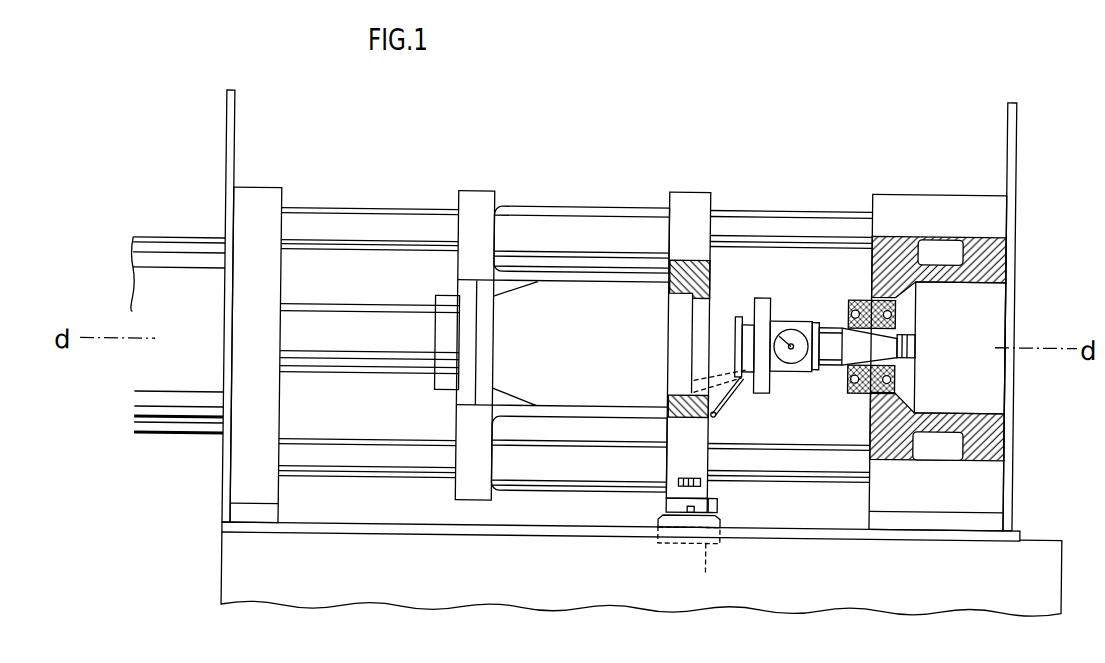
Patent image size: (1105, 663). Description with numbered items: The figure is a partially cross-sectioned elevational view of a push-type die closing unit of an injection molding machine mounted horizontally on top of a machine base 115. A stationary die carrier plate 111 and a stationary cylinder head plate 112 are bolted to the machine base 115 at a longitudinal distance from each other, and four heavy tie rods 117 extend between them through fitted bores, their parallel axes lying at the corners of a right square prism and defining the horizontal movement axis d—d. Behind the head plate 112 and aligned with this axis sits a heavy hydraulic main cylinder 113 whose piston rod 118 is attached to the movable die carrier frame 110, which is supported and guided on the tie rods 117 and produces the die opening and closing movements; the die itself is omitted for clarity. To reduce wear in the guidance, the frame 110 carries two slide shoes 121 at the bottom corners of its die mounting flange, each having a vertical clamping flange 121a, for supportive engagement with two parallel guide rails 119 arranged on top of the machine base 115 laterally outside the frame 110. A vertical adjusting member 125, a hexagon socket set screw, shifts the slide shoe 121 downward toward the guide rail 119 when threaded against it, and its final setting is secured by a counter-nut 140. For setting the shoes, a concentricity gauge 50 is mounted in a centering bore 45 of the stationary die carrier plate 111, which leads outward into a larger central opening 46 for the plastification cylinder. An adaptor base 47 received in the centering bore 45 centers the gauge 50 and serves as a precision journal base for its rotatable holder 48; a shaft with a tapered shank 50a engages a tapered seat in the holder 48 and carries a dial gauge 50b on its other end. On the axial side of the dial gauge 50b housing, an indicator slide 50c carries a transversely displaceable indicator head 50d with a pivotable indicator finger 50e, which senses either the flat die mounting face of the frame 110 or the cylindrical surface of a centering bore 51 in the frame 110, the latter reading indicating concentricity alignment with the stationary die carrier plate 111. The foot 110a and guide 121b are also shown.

The centering bore 45 is at (915, 400).
The central opening 46 is at (977, 306).
The adaptor base 47 is at (855, 405).
The rotatable holder 48 is at (846, 295).
The concentricity gauge 50 is at (792, 368).
The tapered shank 50a is at (912, 347).
The dial gauge 50b is at (792, 327).
The indicator slide 50c is at (750, 371).
The indicator head 50d is at (745, 336).
The indicator finger 50e is at (703, 370).
The centering bore 51 is at (698, 300).
The movable die carrier frame 110 is at (682, 222).
The platen foot 110a is at (668, 495).
The stationary die carrier plate 111 is at (935, 204).
The stationary cylinder head plate 112 is at (245, 468).
The main cylinder 113 is at (162, 414).
The machine base 115 is at (288, 580).
The tie rods 117 is at (318, 228).
The piston rod 118 is at (363, 325).
The guide rails 119 is at (368, 525).
The slide shoes 121 is at (680, 515).
The clamping flange 121a is at (715, 501).
The guide 121b is at (690, 564).
The vertical adjusting member 125 is at (690, 505).
The counter-nut 140 is at (703, 478).